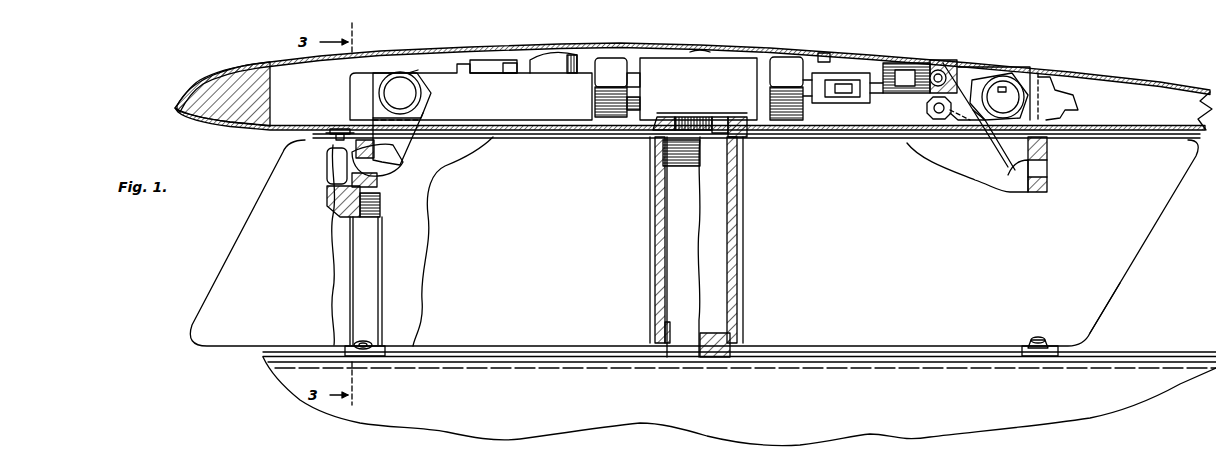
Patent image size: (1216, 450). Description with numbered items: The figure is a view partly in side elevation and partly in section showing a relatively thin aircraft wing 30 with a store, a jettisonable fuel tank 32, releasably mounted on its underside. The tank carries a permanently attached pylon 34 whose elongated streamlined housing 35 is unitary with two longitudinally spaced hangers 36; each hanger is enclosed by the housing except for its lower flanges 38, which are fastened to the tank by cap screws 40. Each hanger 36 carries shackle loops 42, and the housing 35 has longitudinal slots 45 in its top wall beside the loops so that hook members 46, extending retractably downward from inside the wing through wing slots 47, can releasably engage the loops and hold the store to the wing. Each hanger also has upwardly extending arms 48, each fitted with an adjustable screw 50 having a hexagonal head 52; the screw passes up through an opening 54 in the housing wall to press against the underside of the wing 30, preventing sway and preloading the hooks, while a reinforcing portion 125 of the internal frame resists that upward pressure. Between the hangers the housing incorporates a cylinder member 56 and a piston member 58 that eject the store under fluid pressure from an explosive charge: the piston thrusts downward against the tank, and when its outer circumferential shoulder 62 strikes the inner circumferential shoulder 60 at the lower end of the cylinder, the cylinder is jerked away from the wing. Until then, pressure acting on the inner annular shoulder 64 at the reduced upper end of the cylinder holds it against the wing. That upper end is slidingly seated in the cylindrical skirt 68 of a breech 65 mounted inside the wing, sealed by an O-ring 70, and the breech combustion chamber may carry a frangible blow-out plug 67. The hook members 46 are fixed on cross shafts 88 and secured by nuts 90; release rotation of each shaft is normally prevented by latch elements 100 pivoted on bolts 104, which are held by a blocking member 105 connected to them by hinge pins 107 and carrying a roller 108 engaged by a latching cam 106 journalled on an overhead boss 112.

The aircraft wing 30 is at (1160, 78).
The jettisonable fuel tank 32 is at (1122, 348).
The pylon 34 is at (1147, 246).
The streamlined housing 35 is at (1105, 283).
The hanger 36 is at (378, 282).
The flange 38 is at (386, 343).
The cap screw 40 is at (363, 340).
The shackle loop 42 is at (400, 148).
The longitudinal slot 45 is at (437, 139).
The hook member 46 is at (396, 166).
The wing slot 47 is at (481, 128).
The upwardly extending arm 48 is at (333, 188).
The screw 50 is at (327, 155).
The hexagonal head 52 is at (338, 128).
The opening 54 is at (362, 138).
The cylinder member 56 is at (746, 268).
The piston member 58 is at (736, 225).
The inner circumferential shoulder 60 is at (735, 318).
The outer circumferential shoulder 62 is at (738, 163).
The inner annular shoulder 64 is at (728, 140).
The breech 65 is at (742, 66).
The frangible blow-out plug 67 is at (706, 50).
The cylindrical skirt 68 is at (660, 117).
The O-ring 70 is at (683, 117).
The cross shaft 88 is at (400, 90).
The nut 90 is at (412, 75).
The latch element 100 is at (983, 63).
The bolt 104 is at (927, 108).
The blocking member 105 is at (938, 66).
The latching cam 106 is at (876, 66).
The hinge pin 107 is at (956, 78).
The roller 108 is at (908, 66).
The overhead boss 112 is at (826, 55).
The reinforcing portion 125 is at (1078, 113).